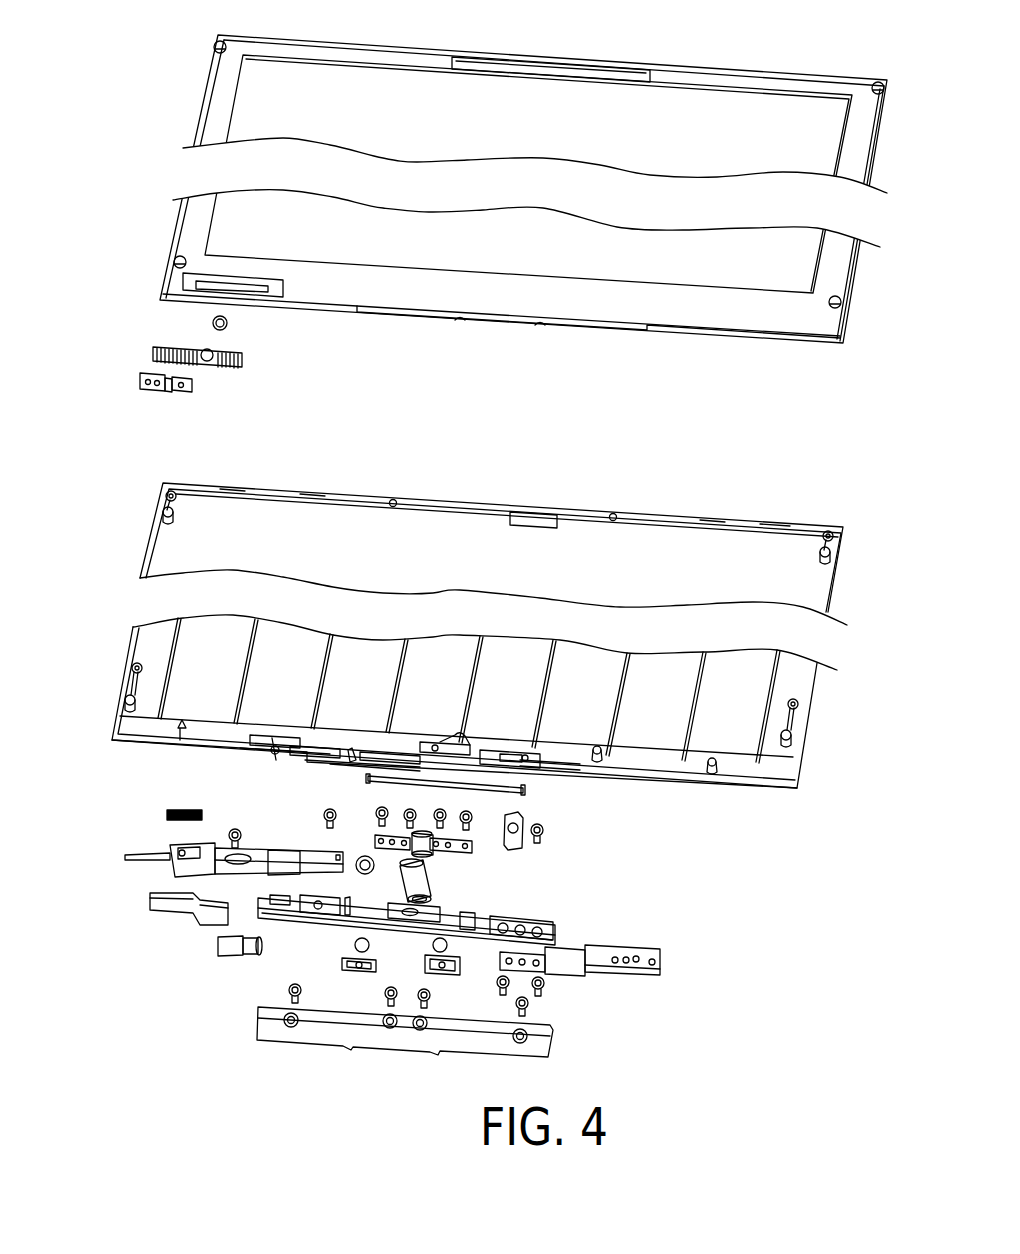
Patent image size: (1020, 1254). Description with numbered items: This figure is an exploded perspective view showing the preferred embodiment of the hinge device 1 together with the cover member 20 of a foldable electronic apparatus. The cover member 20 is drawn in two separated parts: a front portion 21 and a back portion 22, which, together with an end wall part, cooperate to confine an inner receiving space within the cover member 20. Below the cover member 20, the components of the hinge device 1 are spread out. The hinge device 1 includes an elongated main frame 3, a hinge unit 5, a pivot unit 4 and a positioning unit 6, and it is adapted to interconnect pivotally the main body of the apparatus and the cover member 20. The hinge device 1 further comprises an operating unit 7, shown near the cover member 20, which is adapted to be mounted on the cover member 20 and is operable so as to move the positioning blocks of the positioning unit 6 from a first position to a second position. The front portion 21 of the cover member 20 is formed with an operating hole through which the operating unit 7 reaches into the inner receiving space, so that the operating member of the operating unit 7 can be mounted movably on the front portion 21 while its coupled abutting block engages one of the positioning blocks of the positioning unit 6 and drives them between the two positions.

The hinge device 1 is at (467, 933).
The elongated main frame 3 is at (273, 1045).
The pivot unit 4 is at (445, 877).
The hinge unit 5 is at (633, 987).
The positioning unit 6 is at (528, 805).
The operating unit 7 is at (145, 350).
The cover member 20 is at (521, 411).
The front portion 21 is at (843, 280).
The back portion 22 is at (837, 588).